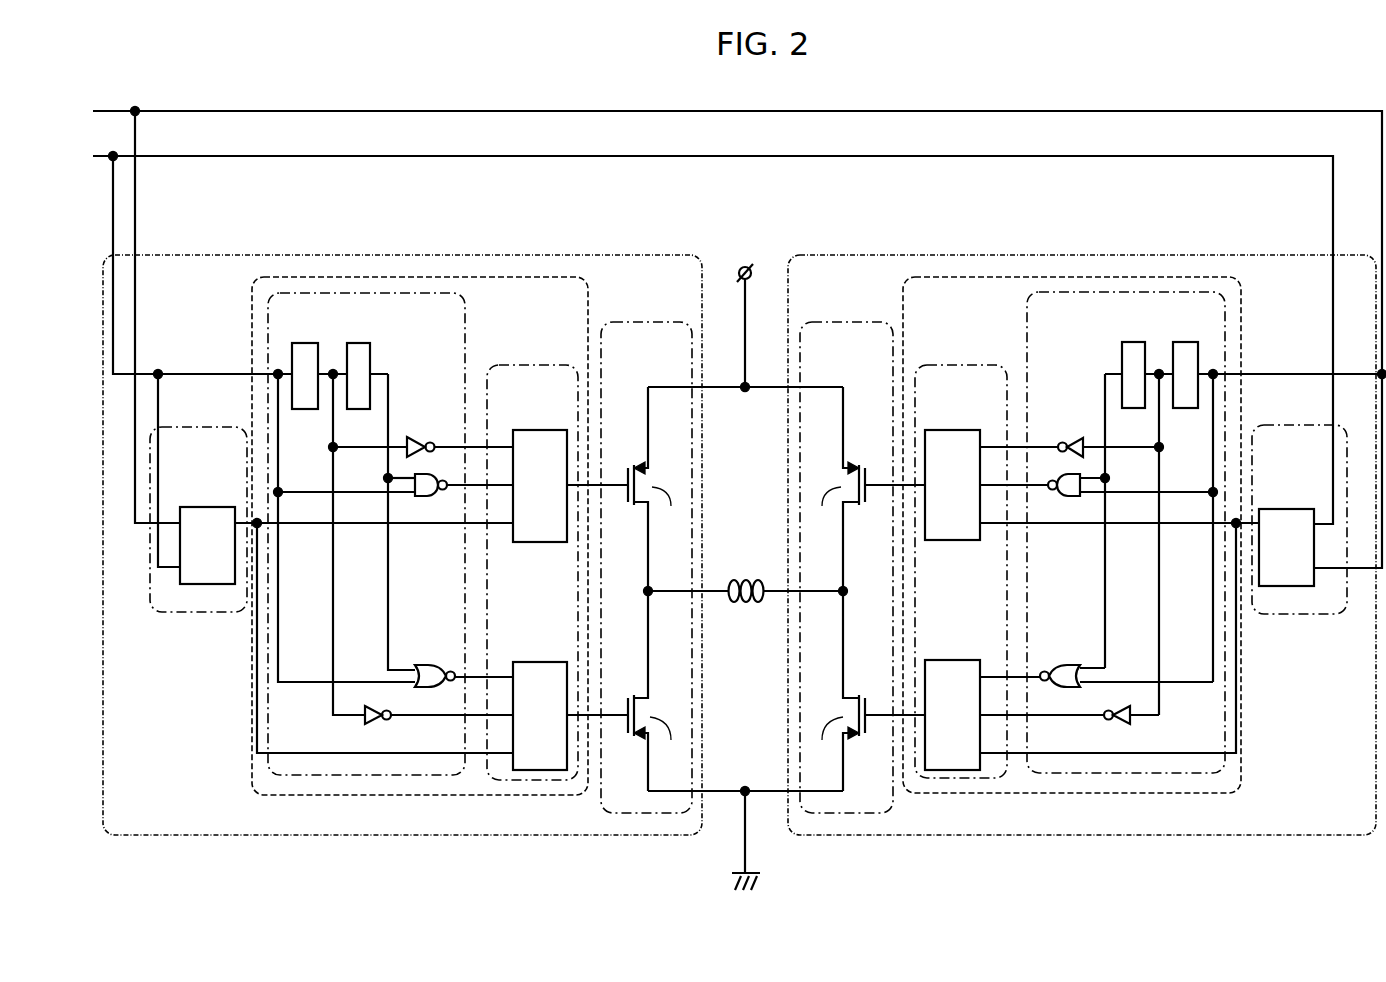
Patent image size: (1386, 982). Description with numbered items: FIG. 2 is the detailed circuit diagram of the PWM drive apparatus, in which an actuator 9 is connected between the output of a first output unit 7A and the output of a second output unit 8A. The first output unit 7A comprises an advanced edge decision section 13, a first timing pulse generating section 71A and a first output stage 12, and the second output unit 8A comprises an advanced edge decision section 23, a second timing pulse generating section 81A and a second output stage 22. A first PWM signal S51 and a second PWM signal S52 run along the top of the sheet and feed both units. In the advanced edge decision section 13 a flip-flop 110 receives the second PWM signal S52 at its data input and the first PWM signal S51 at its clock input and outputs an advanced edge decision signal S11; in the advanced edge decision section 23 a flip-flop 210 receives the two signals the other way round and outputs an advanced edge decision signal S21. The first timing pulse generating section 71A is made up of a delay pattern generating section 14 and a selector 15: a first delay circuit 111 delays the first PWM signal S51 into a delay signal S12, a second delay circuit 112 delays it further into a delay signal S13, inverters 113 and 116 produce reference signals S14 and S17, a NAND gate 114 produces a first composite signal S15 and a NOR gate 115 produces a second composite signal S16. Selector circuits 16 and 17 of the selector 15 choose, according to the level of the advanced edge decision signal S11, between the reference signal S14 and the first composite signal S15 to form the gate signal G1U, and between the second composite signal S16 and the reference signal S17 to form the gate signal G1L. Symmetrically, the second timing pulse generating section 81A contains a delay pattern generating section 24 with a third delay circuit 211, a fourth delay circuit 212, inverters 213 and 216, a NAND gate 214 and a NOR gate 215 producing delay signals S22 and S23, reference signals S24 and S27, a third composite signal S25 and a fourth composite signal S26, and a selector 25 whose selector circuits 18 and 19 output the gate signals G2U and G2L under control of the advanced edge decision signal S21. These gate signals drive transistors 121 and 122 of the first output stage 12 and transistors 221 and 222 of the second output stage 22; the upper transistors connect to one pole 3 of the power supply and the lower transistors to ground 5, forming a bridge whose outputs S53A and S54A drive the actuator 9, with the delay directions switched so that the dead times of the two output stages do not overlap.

The second PWM signal S52 is at (192, 111).
The first PWM signal S51 is at (216, 156).
The first output unit 7A is at (172, 255).
The second output unit 8A is at (957, 255).
The first timing pulse generating section 71A is at (252, 296).
The second timing pulse generating section 81A is at (1241, 336).
The delay pattern generating section 14 is at (268, 340).
The delay pattern generating section 24 is at (1226, 301).
The selector 15 is at (510, 365).
The selector 25 is at (945, 365).
The selector circuit 16 is at (550, 430).
The selector circuit 17 is at (550, 662).
The selector circuit 18 is at (950, 430).
The selector circuit 19 is at (950, 660).
The first output stage 12 is at (640, 322).
The second output stage 22 is at (845, 322).
The advanced edge decision section 13 is at (203, 613).
The advanced edge decision section 23 is at (1270, 614).
The flip-flop 110 is at (200, 507).
The flip-flop 210 is at (1295, 509).
The first delay circuit 111 is at (305, 343).
The second delay circuit 112 is at (357, 343).
The third delay circuit 211 is at (1185, 342).
The fourth delay circuit 212 is at (1133, 342).
The inverter 113 is at (414, 437).
The NAND gate 114 is at (425, 496).
The NOR gate 115 is at (425, 665).
The inverter 116 is at (378, 707).
The inverter 213 is at (1075, 438).
The NAND gate 214 is at (1067, 496).
The NOR gate 215 is at (1075, 665).
The inverter 216 is at (1118, 707).
The transistor 121 is at (658, 489).
The transistor 122 is at (659, 691).
The transistor 221 is at (838, 489).
The transistor 222 is at (838, 691).
The pole of power supply 3 is at (745, 267).
The ground 5 is at (765, 880).
The actuator 9 is at (760, 579).
The gate signal G1U is at (614, 485).
The gate signal G1L is at (614, 715).
The gate signal G2U is at (878, 485).
The gate signal G2L is at (878, 715).
The advanced edge decision signal S11 is at (305, 525).
The delay signal S12 is at (333, 418).
The delay signal S13 is at (388, 378).
The reference signal S14 is at (498, 447).
The first composite signal S15 is at (447, 467).
The second composite signal S16 is at (498, 677).
The reference signal S17 is at (437, 716).
The advanced edge decision signal S21 is at (1180, 525).
The delay signal S22 is at (1159, 418).
The delay signal S23 is at (1105, 378).
The reference signal S24 is at (990, 447).
The third composite signal S25 is at (1042, 478).
The fourth composite signal S26 is at (992, 677).
The reference signal S27 is at (1060, 716).
The output S53A is at (715, 591).
The output S54A is at (772, 602).